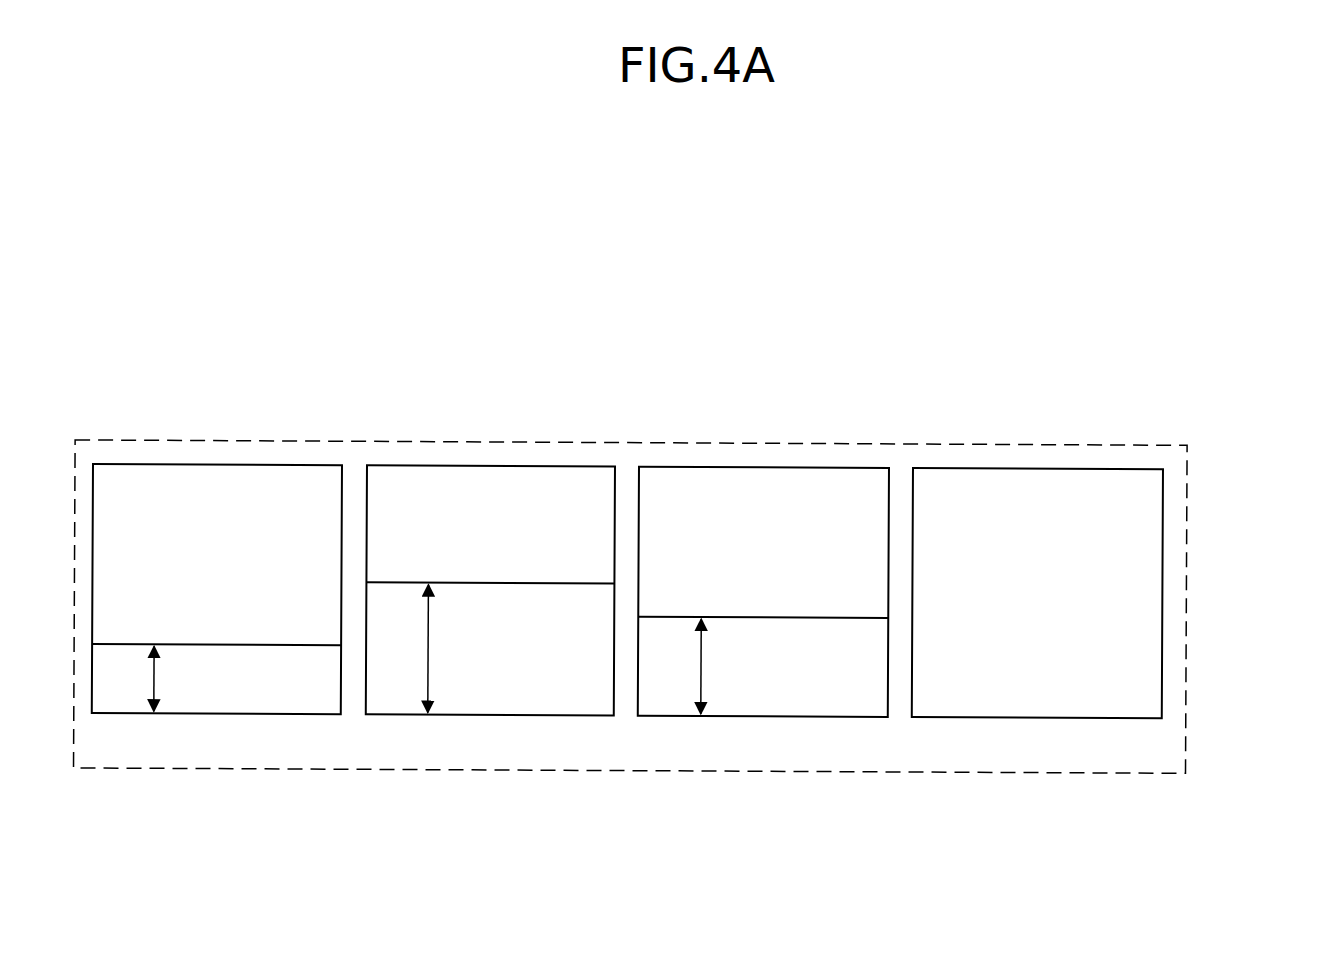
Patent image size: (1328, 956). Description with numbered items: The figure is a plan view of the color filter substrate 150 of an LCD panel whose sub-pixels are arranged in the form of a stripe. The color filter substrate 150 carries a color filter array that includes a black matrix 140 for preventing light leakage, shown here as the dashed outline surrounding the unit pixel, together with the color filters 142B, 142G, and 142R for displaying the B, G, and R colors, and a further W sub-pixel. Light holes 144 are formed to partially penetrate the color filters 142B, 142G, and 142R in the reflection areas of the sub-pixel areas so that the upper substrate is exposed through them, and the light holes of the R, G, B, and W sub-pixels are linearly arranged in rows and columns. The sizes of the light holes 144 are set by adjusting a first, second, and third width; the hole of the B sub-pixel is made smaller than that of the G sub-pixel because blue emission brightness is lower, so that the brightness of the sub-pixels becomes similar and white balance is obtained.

The black matrix 140 is at (902, 769).
The blue color filter 142B is at (217, 464).
The green color filter 142G is at (492, 464).
The red color filter 142R is at (765, 464).
The light hole 144 is at (288, 644).
The color filter substrate 150 is at (698, 608).